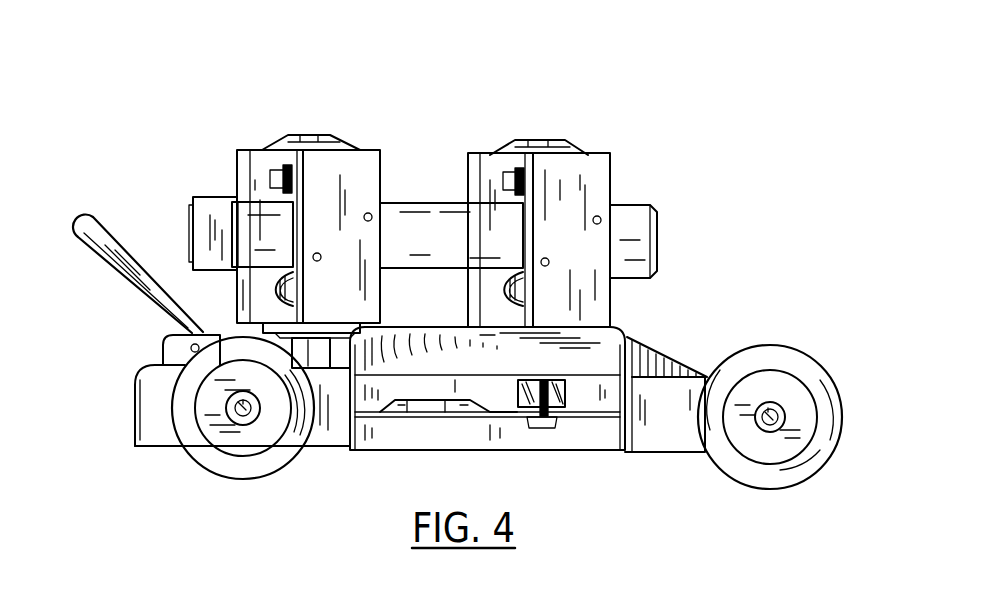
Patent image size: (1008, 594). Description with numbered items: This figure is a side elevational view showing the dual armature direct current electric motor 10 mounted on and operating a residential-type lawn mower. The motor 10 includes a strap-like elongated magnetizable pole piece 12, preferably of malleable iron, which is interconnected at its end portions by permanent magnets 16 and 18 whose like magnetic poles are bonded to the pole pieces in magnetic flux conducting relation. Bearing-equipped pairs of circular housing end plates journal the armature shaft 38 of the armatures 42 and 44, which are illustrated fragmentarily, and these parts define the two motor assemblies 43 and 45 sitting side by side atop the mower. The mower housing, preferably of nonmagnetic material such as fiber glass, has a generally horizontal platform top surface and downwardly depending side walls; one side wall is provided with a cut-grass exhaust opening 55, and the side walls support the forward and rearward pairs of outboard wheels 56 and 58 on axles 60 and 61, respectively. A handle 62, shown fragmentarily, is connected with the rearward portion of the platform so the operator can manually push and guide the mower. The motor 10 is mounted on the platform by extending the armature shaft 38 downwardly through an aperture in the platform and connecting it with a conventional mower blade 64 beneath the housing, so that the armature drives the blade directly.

The dual armature direct current electric motor 10 is at (430, 198).
The pole piece 12 is at (377, 235).
The permanent magnet 16 is at (203, 198).
The permanent magnet 18 is at (633, 205).
The armature shaft 38 is at (568, 396).
The armature 42 is at (523, 303).
The motor assembly 43 is at (615, 147).
The armature 44 is at (293, 303).
The motor assembly 45 is at (262, 138).
The cut-grass exhaust opening 55 is at (620, 438).
The forward pair of outboard wheels 56 is at (843, 398).
The rearward pair of outboard wheels 58 is at (290, 463).
The axle 60 is at (771, 410).
The axle 61 is at (247, 416).
The handle 62 is at (127, 248).
The mower blade 64 is at (433, 414).